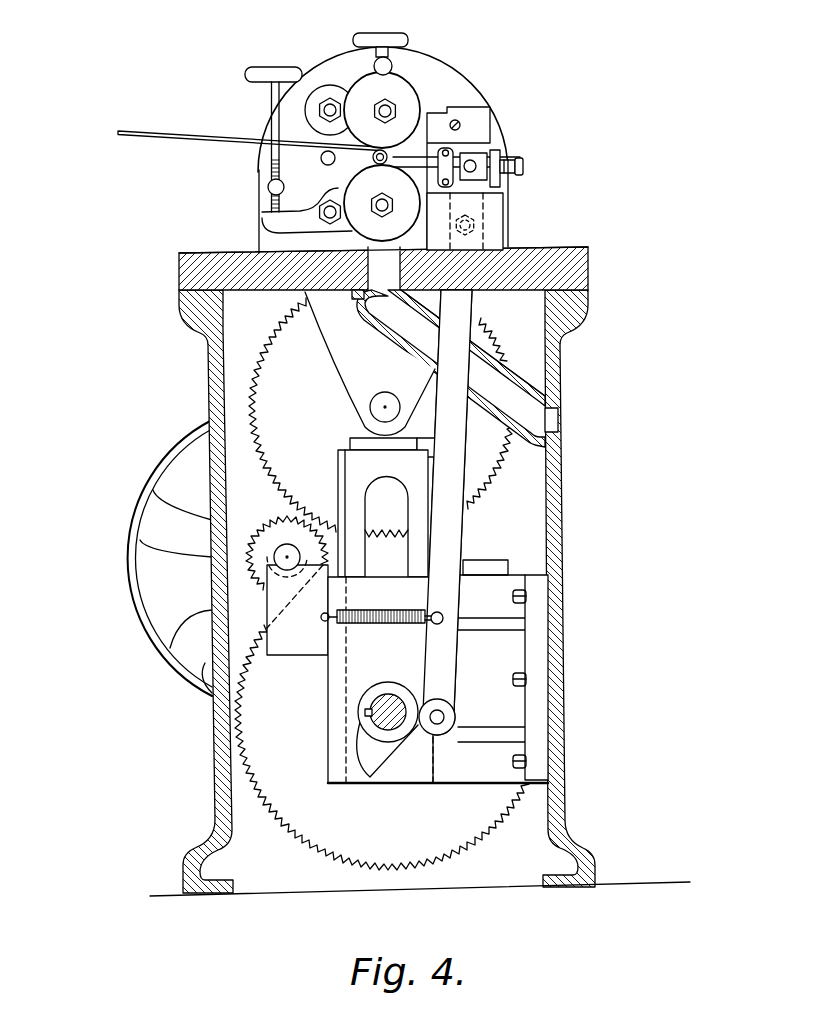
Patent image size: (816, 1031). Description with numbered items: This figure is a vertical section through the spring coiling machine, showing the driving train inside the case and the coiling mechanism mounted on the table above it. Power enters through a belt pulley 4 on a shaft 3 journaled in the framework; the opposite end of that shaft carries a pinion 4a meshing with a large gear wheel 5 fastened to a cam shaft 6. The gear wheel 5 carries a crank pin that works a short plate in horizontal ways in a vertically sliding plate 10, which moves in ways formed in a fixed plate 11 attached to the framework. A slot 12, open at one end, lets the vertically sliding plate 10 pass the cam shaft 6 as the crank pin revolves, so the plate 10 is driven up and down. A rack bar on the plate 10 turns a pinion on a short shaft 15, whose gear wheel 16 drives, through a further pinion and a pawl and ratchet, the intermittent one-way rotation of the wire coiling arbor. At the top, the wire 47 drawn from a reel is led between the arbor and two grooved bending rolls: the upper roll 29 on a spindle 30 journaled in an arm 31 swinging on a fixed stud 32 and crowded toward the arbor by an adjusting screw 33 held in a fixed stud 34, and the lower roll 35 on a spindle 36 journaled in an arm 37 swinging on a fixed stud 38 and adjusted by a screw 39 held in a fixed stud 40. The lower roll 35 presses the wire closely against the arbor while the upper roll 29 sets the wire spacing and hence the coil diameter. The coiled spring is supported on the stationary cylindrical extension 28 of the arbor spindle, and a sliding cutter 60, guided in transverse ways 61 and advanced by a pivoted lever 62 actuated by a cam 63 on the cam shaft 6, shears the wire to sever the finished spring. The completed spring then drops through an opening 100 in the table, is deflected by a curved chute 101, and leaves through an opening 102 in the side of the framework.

The shaft 3 is at (284, 552).
The belt pulley 4 is at (152, 519).
The pinion 4a is at (283, 530).
The gear wheel 5 is at (303, 826).
The cam shaft 6 is at (396, 700).
The vertically sliding plate 10 is at (345, 468).
The fixed plate 11 is at (335, 662).
The slot 12 is at (398, 488).
The short shaft 15 is at (381, 396).
The gear wheel 16 is at (270, 358).
The cylindrical extension 28 is at (382, 203).
The grooved bending roll 29 is at (414, 112).
The spindle 30 is at (390, 102).
The arm 31 is at (337, 90).
The fixed stud 32 is at (318, 118).
The adjusting screw 33 is at (390, 58).
The fixed stud 34 is at (393, 70).
The grooved bending roll 35 is at (363, 232).
The spindle 36 is at (384, 217).
The arm 37 is at (298, 208).
The fixed stud 38 is at (332, 199).
The screw 39 is at (271, 167).
The fixed stud 40 is at (267, 188).
The wire 47 is at (197, 133).
The sliding cutter 60 is at (456, 178).
The transverse ways 61 is at (494, 152).
The pivoted lever 62 is at (459, 548).
The cam 63 is at (365, 748).
The opening 100 is at (366, 300).
The curved chute 101 is at (507, 382).
The opening 102 is at (559, 414).